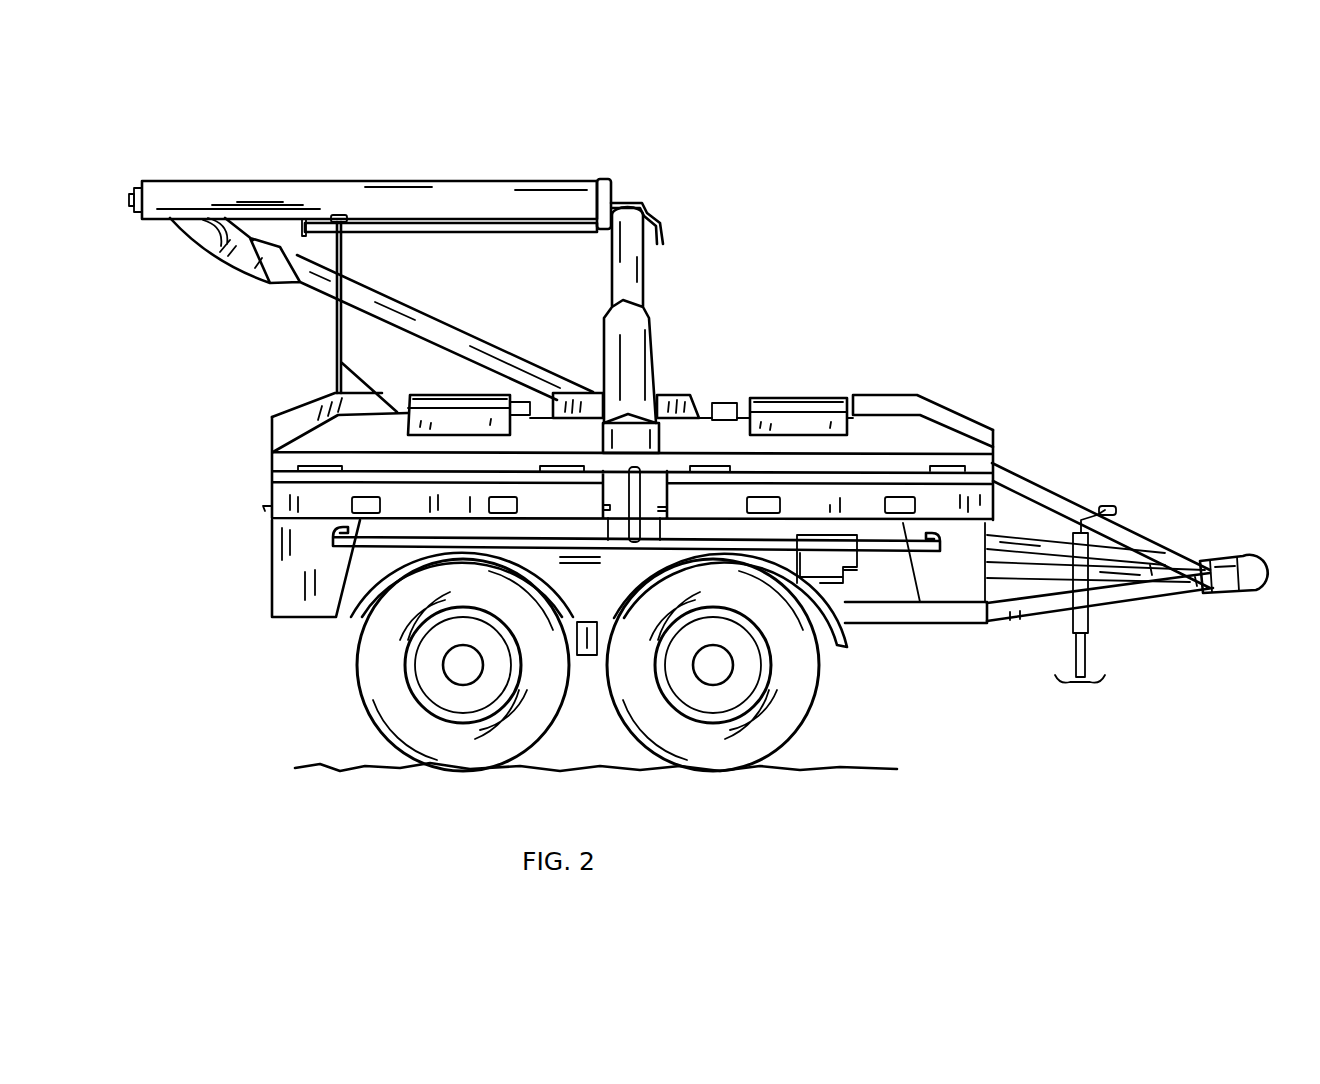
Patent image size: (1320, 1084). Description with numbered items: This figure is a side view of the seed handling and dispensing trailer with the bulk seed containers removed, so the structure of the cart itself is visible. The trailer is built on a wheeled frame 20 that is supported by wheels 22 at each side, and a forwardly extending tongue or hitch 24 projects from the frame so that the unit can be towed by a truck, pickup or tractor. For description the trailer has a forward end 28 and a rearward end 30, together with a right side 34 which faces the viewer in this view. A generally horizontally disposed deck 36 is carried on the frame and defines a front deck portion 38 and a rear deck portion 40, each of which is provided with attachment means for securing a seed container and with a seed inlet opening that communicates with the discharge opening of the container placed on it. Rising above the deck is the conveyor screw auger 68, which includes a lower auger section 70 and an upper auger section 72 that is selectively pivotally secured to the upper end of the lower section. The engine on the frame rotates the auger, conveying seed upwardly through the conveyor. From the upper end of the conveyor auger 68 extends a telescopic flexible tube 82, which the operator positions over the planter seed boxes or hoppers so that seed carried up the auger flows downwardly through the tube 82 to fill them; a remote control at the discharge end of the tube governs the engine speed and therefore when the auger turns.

The wheeled frame 20 is at (325, 660).
The wheels 22 is at (530, 713).
The tongue or hitch 24 is at (1172, 540).
The forward end 28 is at (1040, 430).
The rearward end 30 is at (247, 550).
The right side 34 is at (608, 586).
The deck 36 is at (690, 422).
The front deck portion 38 is at (886, 452).
The rear deck portion 40 is at (394, 450).
The conveyor screw auger 68 is at (651, 255).
The lower auger section 70 is at (642, 287).
The upper auger section 72 is at (440, 197).
The telescopic flexible tube 82 is at (426, 309).